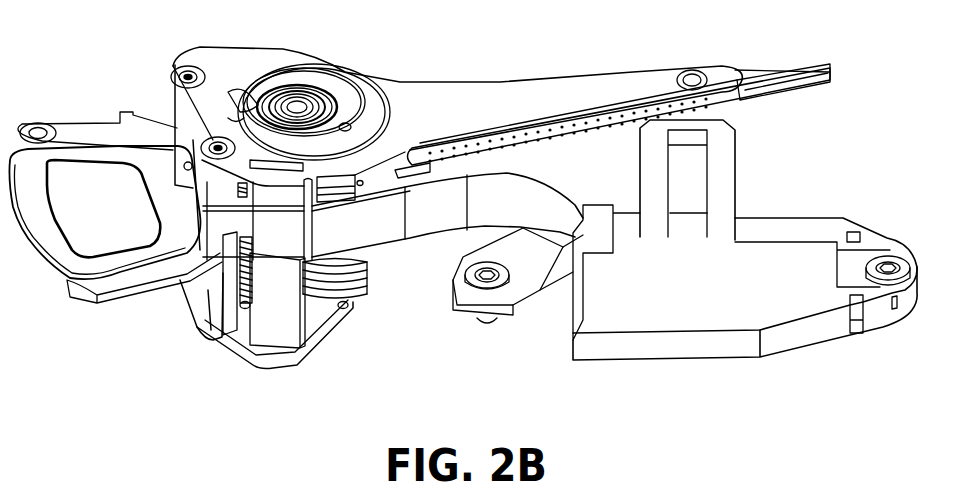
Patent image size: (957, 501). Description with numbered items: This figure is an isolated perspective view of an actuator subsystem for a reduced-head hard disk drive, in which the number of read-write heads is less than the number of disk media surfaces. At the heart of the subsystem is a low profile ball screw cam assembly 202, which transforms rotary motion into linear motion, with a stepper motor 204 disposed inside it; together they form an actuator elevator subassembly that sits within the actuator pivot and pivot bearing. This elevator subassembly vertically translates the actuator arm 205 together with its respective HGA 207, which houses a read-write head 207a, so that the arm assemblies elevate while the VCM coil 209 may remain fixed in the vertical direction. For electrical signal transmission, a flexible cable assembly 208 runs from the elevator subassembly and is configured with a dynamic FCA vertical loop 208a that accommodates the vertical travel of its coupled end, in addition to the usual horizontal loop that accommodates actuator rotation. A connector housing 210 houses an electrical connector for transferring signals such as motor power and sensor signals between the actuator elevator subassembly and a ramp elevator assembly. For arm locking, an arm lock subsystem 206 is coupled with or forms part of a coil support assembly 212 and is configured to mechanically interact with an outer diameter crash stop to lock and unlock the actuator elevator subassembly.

The low profile ball screw cam assembly 202 is at (345, 302).
The stepper motor 204 is at (297, 107).
The actuator arm 205 is at (450, 92).
The arm lock subsystem 206 is at (127, 112).
The HGA 207 is at (752, 75).
The read-write head 207a is at (827, 83).
The flexible cable assembly 208 is at (387, 235).
The FCA vertical loop 208a is at (367, 270).
The VCM coil 209 is at (50, 233).
The connector housing 210 is at (718, 185).
The coil support assembly 212 is at (177, 107).